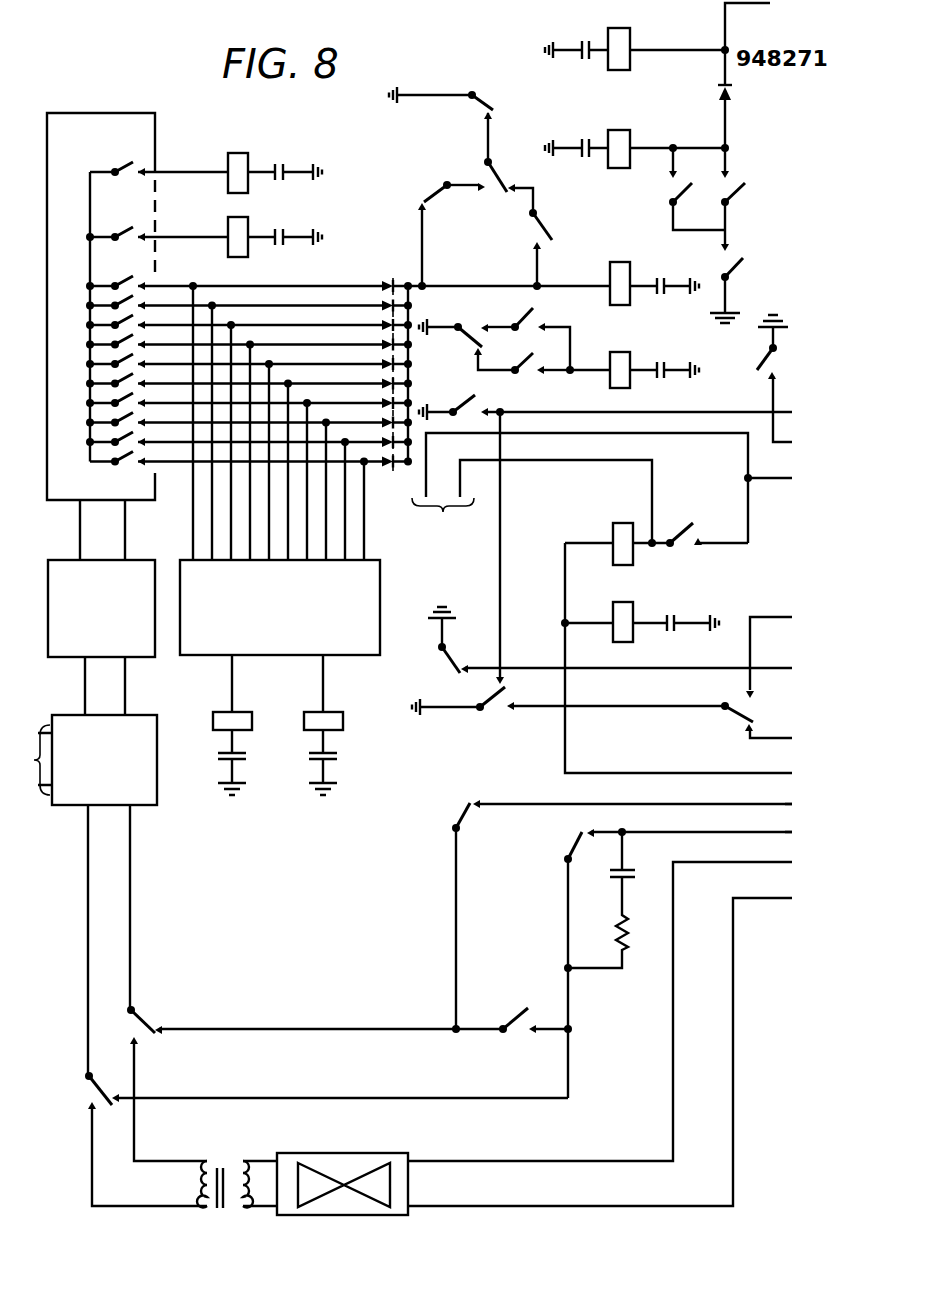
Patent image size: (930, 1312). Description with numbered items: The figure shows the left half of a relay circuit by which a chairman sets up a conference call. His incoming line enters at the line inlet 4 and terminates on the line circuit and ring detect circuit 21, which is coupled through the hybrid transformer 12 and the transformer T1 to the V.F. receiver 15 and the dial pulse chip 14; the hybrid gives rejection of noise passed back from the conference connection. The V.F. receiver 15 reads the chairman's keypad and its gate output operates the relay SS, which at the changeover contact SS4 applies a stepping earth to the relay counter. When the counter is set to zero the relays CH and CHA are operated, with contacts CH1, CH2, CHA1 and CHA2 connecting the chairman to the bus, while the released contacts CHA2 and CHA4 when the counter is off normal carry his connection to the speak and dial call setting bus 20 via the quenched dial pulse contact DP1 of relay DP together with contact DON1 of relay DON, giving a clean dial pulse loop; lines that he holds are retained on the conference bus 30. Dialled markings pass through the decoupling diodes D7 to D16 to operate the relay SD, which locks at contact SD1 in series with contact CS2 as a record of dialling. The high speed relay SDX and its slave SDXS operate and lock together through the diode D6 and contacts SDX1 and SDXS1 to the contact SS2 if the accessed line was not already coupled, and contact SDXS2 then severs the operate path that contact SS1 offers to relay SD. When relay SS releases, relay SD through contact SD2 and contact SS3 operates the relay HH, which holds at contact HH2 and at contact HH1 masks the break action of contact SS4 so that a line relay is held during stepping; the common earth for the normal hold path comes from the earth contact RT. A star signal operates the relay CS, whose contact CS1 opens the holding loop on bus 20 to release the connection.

The V.F. receiver 15 is at (87, 133).
The hybrid transformer 12 is at (80, 633).
The dial pulse chip 14 is at (280, 607).
The line circuit and ring detect circuit 21 is at (157, 757).
The line inlet 4 is at (32, 760).
The speak and dial call setting bus 20 is at (745, 804).
The conference bus 30 is at (762, 870).
The relay CS is at (230, 161).
The relay SS is at (230, 249).
The decoupling diode D7 is at (280, 275).
The decoupling diode D16 is at (274, 472).
The contact CS2 is at (451, 115).
The contact SS1 is at (513, 185).
The contact SD1 is at (558, 249).
The contact SDXS2 is at (425, 232).
The relay SDX is at (637, 36).
The relay SDXS is at (637, 136).
The diode D6 is at (739, 96).
The contact SDXS1 is at (672, 190).
The contact SDX1 is at (735, 190).
The contact SS2 is at (739, 283).
The relay SD is at (560, 271).
The relay HH is at (634, 358).
The contact SS3 is at (473, 330).
The contact HH2 is at (528, 310).
The contact SD2 is at (526, 372).
The contact HH1 is at (470, 398).
The earth contact RT is at (764, 378).
The relay CH is at (678, 635).
The contact CHA1 is at (696, 524).
The relay CHA is at (640, 634).
The contact CH2 is at (610, 640).
The contact SS4 is at (490, 712).
The contact CH1 is at (737, 712).
The relay DP is at (247, 725).
The relay DON is at (347, 725).
The contact CS1 is at (454, 808).
The contact DP1 is at (580, 836).
The contact DON1 is at (365, 1034).
The contact CHA2 is at (140, 1016).
The contact CHA4 is at (103, 1087).
The transformer T1 is at (237, 1171).